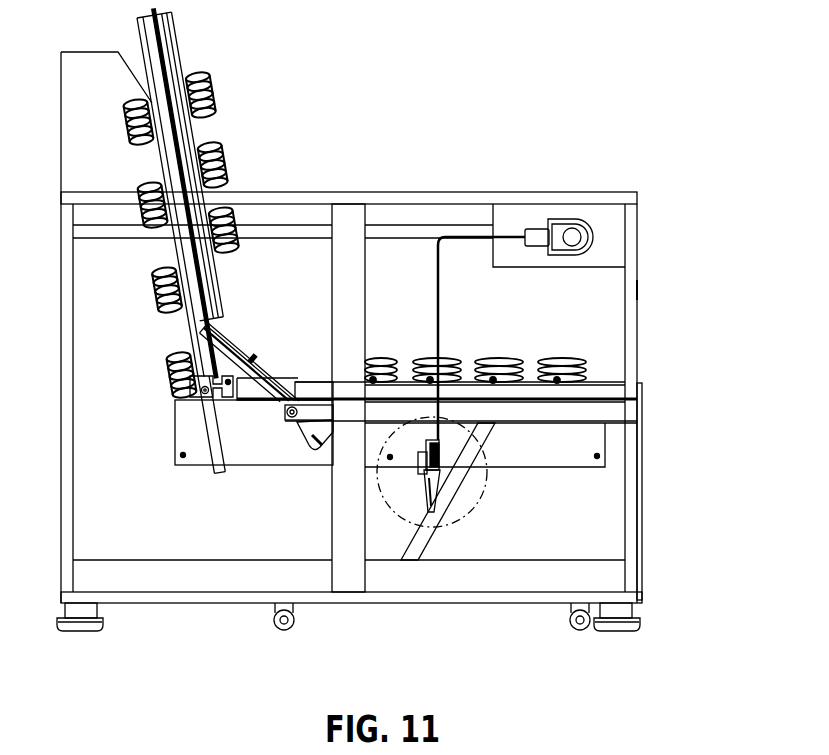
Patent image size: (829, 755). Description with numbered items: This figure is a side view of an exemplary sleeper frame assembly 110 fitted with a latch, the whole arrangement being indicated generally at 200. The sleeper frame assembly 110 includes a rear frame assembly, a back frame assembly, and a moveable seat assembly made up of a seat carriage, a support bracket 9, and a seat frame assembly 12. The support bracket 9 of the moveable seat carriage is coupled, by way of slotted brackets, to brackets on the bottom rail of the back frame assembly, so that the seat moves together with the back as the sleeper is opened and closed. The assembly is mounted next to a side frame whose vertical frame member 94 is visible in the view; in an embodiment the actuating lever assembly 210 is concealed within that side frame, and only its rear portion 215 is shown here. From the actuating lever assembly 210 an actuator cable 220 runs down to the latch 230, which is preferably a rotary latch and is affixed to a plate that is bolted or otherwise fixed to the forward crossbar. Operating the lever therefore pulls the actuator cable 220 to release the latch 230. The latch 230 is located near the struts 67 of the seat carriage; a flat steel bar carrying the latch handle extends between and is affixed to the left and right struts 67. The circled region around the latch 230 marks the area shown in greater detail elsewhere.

The tablet dispensing system 200 is at (524, 56).
The sleeper frame assembly 110 is at (181, 48).
The actuating lever assembly 210 is at (573, 232).
The rear portion of actuating lever assembly 215 is at (583, 238).
The vertical frame member 94 is at (637, 293).
The actuator cable 220 is at (440, 320).
The support bracket 9 is at (615, 411).
The seat frame assembly 12 is at (490, 474).
The latch 230 is at (420, 487).
The strut 67 is at (430, 540).